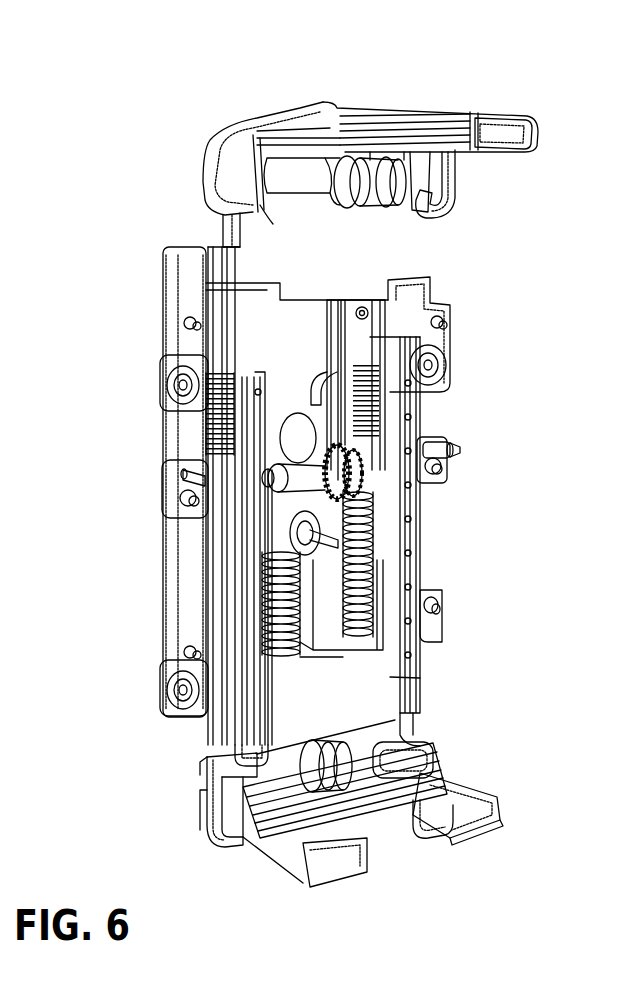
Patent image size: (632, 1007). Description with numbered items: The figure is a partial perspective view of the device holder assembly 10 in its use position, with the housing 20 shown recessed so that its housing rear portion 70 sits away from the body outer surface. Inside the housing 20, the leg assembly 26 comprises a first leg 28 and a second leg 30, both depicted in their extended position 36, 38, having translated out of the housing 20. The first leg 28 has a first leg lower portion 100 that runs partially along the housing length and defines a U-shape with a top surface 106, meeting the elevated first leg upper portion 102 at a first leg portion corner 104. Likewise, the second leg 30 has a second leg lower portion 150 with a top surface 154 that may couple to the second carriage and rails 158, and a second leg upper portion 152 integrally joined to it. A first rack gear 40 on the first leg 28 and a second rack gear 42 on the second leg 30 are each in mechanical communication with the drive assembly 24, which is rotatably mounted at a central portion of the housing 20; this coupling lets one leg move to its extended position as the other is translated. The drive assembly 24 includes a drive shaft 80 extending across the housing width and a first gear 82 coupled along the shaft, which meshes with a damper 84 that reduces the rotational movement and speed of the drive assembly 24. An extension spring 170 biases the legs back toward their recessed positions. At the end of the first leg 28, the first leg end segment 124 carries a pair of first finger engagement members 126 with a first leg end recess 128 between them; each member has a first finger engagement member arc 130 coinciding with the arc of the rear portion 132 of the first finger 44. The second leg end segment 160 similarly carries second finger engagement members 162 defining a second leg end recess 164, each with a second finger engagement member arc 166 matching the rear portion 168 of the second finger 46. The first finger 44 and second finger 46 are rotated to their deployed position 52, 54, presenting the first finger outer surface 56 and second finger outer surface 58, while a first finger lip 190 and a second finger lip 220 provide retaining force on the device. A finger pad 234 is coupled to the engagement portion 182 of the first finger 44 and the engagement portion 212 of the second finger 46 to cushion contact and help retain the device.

The device holder assembly 10 is at (133, 132).
The housing 20 is at (215, 250).
The drive assembly 24 is at (357, 472).
The leg assembly 26 is at (458, 590).
The first leg 28 is at (440, 240).
The second leg 30 is at (417, 677).
The extended position 36 is at (440, 260).
The extended position 38 is at (268, 727).
The first rack gear 40 is at (213, 410).
The second rack gear 42 is at (215, 545).
The first finger 44 is at (236, 126).
The second finger 46 is at (230, 812).
The deployed position 52 is at (292, 140).
The deployed position 54 is at (280, 843).
The first finger outer surface 56 is at (372, 135).
The second finger outer surface 58 is at (357, 868).
The housing rear portion 70 is at (260, 338).
The drive shaft 80 is at (272, 470).
The first gear 82 is at (348, 485).
The damper 84 is at (423, 445).
The first leg lower portion 100 is at (218, 362).
The first leg upper portion 102 is at (255, 200).
The first leg portion corner 104 is at (265, 290).
The top surface 106 is at (440, 343).
The first leg end segment 124 is at (440, 230).
The first finger engagement member 126 is at (272, 145).
The first leg end recess 128 is at (420, 168).
The first finger engagement member arc 130 is at (203, 153).
The rear portion 132 is at (220, 152).
The second leg lower portion 150 is at (233, 577).
The second leg upper portion 152 is at (248, 745).
The top surface 154 is at (260, 603).
The second carriage and rails 158 is at (400, 548).
The second leg end segment 160 is at (420, 728).
The second finger engagement member 162 is at (247, 845).
The second leg end recess 164 is at (387, 762).
The second finger engagement member arc 166 is at (220, 765).
The rear portion 168 is at (228, 800).
The extension spring 170 is at (298, 548).
The engagement portion 182 is at (524, 114).
The first finger lip 190 is at (537, 140).
The engagement portion 212 is at (467, 790).
The second finger lip 220 is at (497, 813).
The finger pad 234 is at (450, 140).